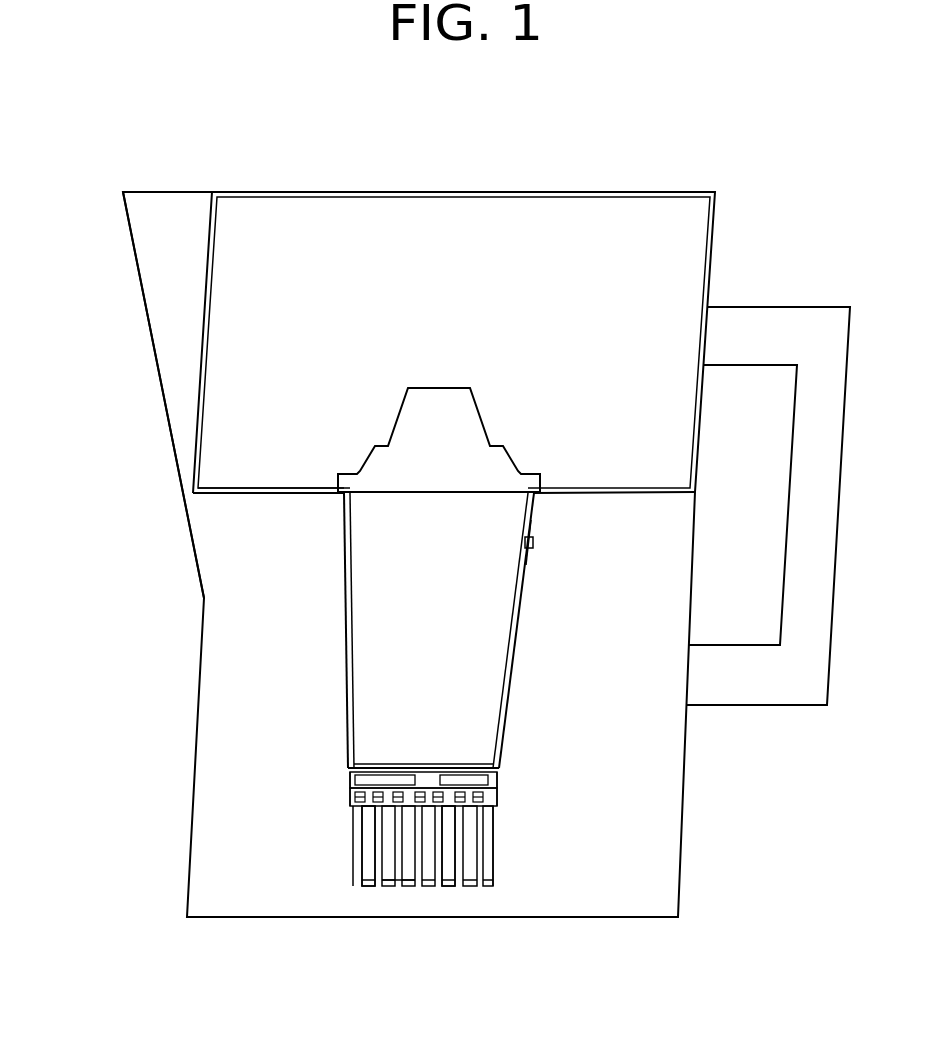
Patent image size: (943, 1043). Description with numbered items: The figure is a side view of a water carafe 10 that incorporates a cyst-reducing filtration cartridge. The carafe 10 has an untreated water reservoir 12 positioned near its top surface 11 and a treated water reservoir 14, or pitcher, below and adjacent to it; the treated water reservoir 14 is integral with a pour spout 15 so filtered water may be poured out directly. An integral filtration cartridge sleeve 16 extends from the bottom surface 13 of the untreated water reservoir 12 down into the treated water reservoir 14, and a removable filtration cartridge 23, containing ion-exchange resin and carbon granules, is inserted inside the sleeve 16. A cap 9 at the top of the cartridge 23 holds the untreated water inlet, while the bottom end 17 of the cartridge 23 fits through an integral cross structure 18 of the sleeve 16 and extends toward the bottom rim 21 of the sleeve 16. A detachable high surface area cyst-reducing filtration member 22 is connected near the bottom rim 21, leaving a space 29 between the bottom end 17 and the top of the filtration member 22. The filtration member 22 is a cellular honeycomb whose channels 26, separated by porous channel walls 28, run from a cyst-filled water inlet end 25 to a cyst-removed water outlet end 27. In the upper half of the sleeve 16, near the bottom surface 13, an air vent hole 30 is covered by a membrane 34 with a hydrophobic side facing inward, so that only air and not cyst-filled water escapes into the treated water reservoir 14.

The cap 9 is at (434, 400).
The water carafe 10 is at (152, 573).
The top surface 11 is at (513, 192).
The untreated water reservoir 12 is at (536, 311).
The bottom surface 13 is at (288, 494).
The treated water reservoir 14 is at (628, 687).
The pour spout 15 is at (128, 222).
The filtration cartridge sleeve 16 is at (335, 692).
The bottom end 17 is at (492, 817).
The integral cross structure 18 is at (490, 763).
The bottom rim 21 is at (350, 808).
The cyst-reducing filtration member 22 is at (480, 856).
The filtration cartridge 23 is at (442, 646).
The cyst-filled water inlet end 25 is at (353, 788).
The channels 26 is at (407, 868).
The cyst-removed water outlet end 27 is at (466, 902).
The porous channel walls 28 is at (372, 847).
The space 29 is at (510, 789).
The air vent hole 30 is at (533, 541).
The membrane 34 is at (533, 546).